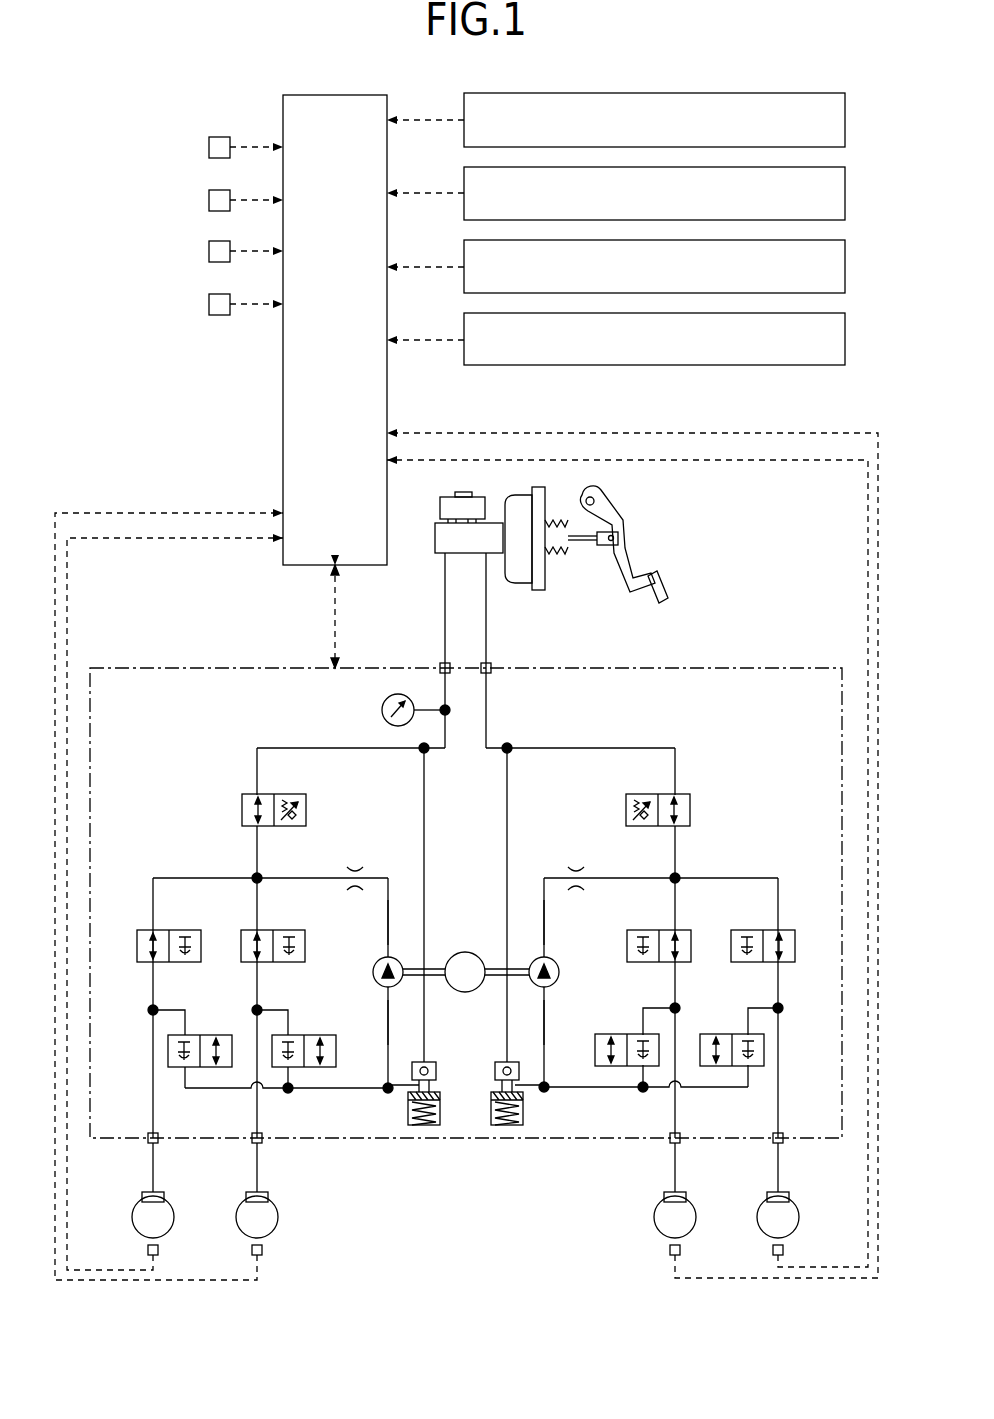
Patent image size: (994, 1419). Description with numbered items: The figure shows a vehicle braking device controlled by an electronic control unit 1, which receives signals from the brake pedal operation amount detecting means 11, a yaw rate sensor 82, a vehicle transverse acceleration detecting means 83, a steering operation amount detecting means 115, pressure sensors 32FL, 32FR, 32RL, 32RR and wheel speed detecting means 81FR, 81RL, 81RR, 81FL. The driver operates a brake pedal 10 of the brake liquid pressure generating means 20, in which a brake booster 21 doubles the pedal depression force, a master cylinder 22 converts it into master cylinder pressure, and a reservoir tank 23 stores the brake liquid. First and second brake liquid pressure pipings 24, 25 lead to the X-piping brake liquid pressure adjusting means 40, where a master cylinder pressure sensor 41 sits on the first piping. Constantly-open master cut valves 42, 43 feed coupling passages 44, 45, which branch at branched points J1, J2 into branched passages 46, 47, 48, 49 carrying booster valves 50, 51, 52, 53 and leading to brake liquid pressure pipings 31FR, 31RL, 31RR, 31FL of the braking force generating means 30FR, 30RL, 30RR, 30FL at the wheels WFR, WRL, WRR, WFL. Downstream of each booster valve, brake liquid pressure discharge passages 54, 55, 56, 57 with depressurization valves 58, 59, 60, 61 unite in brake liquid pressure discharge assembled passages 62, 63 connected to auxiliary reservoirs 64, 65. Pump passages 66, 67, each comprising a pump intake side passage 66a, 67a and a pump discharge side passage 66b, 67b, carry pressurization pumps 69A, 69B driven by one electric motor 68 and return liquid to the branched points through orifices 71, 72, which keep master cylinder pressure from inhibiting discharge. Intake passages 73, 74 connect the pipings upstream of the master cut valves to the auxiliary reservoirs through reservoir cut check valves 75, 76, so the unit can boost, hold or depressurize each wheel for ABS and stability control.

The electronic control unit 1 is at (348, 95).
The brake pedal 10 is at (626, 562).
The brake pedal operation amount detecting means 11 is at (845, 122).
The brake liquid pressure generating means 20 is at (560, 592).
The braking servo means (brake booster) 21 is at (505, 512).
The master cylinder 22 is at (435, 540).
The reservoir tank 23 is at (440, 510).
The first brake liquid pressure piping 24 is at (445, 643).
The second brake liquid pressure piping 25 is at (486, 643).
The braking force generating means 30FR is at (143, 1195).
The braking force generating means 30RL is at (247, 1195).
The braking force generating means 30RR is at (685, 1195).
The braking force generating means 30FL is at (788, 1195).
The brake liquid pressure piping 31FR is at (153, 1166).
The brake liquid pressure piping 31RL is at (257, 1166).
The brake liquid pressure piping 31RR is at (675, 1166).
The brake liquid pressure piping 31FL is at (778, 1166).
The pressure sensor 32FL is at (209, 148).
The pressure sensor 32FR is at (209, 201).
The pressure sensor 32RL is at (209, 252).
The pressure sensor 32RR is at (209, 305).
The brake liquid pressure adjusting means 40 is at (698, 668).
The master cylinder pressure sensor 41 is at (382, 712).
The master cut valve 42 is at (277, 795).
The master cut valve 43 is at (655, 795).
The coupling passage 44 is at (257, 855).
The coupling passage 45 is at (675, 855).
The branched passage 46 is at (153, 908).
The branched passage 47 is at (257, 908).
The branched passage 48 is at (675, 908).
The branched passage 49 is at (778, 908).
The booster valve (holding valve) 50 is at (176, 930).
The booster valve (holding valve) 51 is at (280, 930).
The booster valve (holding valve) 52 is at (650, 930).
The booster valve (holding valve) 53 is at (757, 930).
The brake liquid pressure discharge passage 54 is at (168, 1008).
The brake liquid pressure discharge passage 55 is at (272, 1008).
The brake liquid pressure discharge passage 56 is at (662, 1006).
The brake liquid pressure discharge passage 57 is at (768, 1006).
The depressurization valve 58 is at (213, 1035).
The depressurization valve 59 is at (317, 1035).
The depressurization valve 60 is at (617, 1035).
The depressurization valve 61 is at (722, 1035).
The brake liquid pressure discharge assembled passage 62 is at (355, 1088).
The brake liquid pressure discharge assembled passage 63 is at (580, 1087).
The auxiliary reservoir 64 is at (408, 1112).
The auxiliary reservoir 65 is at (523, 1112).
The pump passage 66 is at (304, 878).
The pump intake side passage 66a is at (388, 1030).
The pump discharge side passage 66b is at (388, 940).
The pump passage 67 is at (622, 878).
The pump intake side passage 67a is at (544, 1030).
The pump discharge side passage 67b is at (544, 940).
The electric motor 68 is at (465, 952).
The pressurization pump 69A is at (373, 972).
The pressurization pump 69B is at (559, 972).
The orifice 71 is at (356, 866).
The orifice 72 is at (575, 866).
The intake passage 73 is at (424, 783).
The intake passage 74 is at (507, 783).
The reservoir cut check valve 75 is at (426, 1062).
The reservoir cut check valve 76 is at (504, 1062).
The wheel speed detecting means 81FR is at (158, 1250).
The wheel speed detecting means 81RL is at (262, 1250).
The wheel speed detecting means 81RR is at (670, 1250).
The wheel speed detecting means 81FL is at (773, 1250).
The yaw rate sensor 82 is at (845, 195).
The vehicle transverse acceleration detecting means 83 is at (845, 268).
The steering operation amount detecting means 115 is at (845, 340).
The branched point J1 is at (262, 874).
The branched point J2 is at (670, 874).
The right front wheel WFR is at (174, 1224).
The left rear wheel WRL is at (278, 1224).
The right rear wheel WRR is at (654, 1224).
The left front wheel WFL is at (757, 1224).